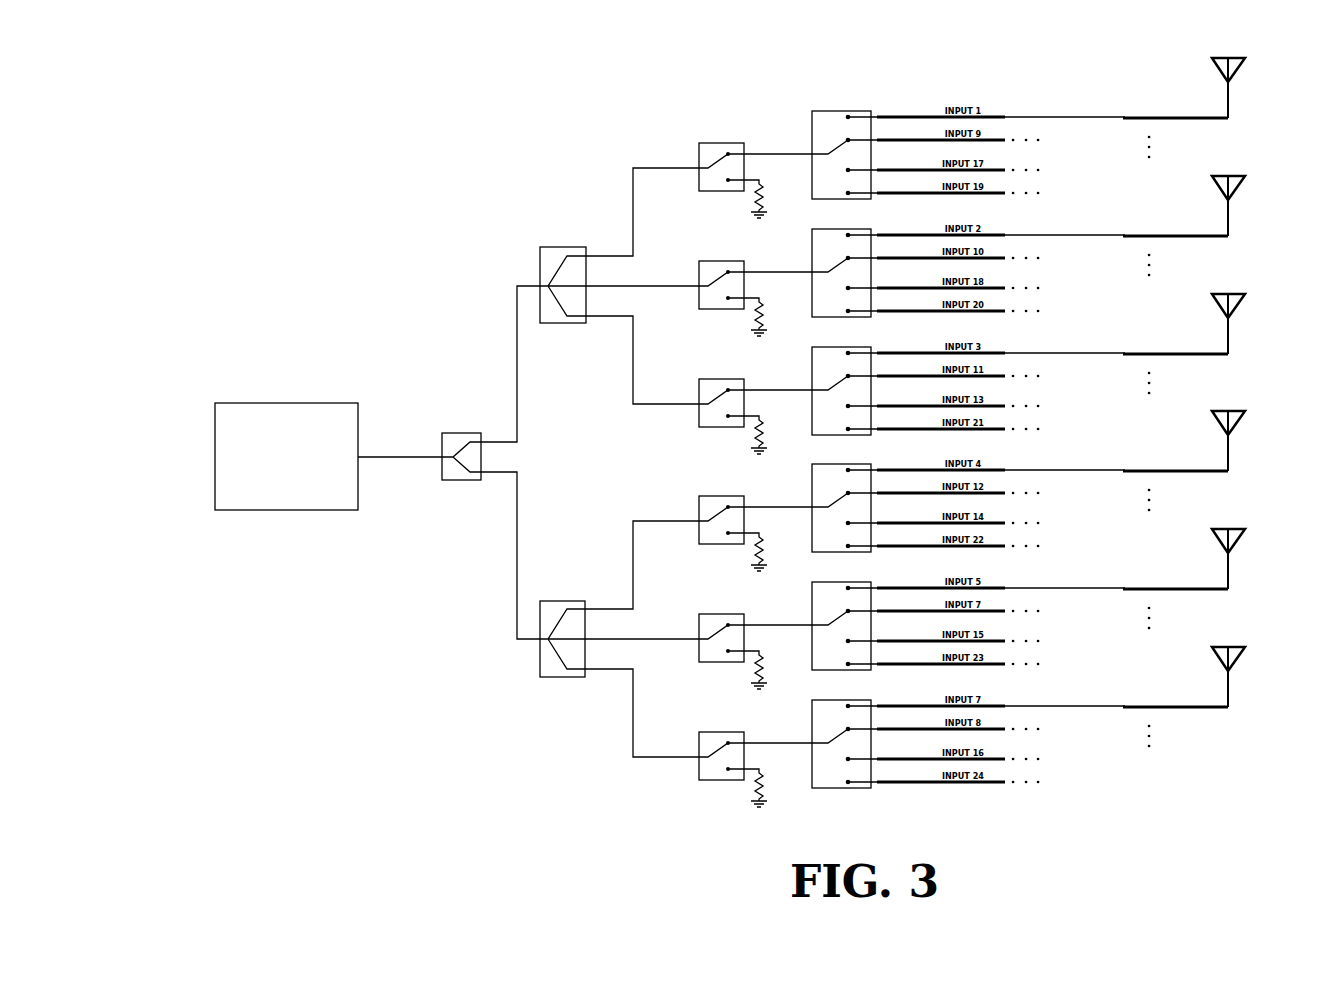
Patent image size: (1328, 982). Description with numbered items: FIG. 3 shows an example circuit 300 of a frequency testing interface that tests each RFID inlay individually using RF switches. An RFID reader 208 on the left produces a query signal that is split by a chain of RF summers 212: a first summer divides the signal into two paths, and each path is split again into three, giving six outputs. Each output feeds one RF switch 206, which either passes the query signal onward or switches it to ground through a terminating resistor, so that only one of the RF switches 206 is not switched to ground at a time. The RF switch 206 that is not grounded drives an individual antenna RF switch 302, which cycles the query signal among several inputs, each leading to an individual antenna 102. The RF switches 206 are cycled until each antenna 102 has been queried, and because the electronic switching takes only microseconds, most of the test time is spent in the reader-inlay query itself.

The circuit 300 is at (306, 95).
The RFID reader 208 is at (272, 476).
The RF summer 212 is at (453, 481).
The RF switch 206 is at (699, 147).
The individual antenna RF switch 302 is at (812, 133).
The test antenna 102 is at (1246, 59).